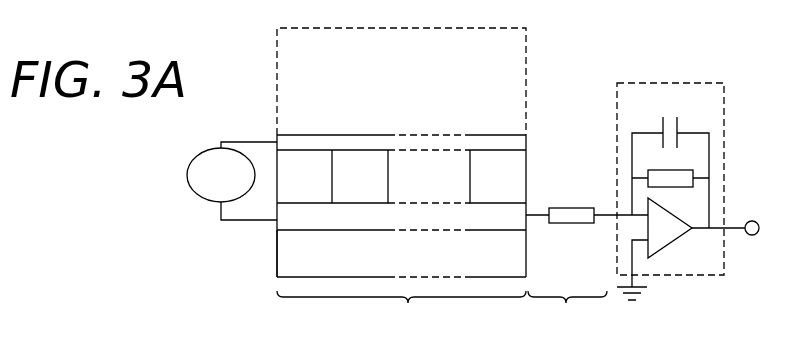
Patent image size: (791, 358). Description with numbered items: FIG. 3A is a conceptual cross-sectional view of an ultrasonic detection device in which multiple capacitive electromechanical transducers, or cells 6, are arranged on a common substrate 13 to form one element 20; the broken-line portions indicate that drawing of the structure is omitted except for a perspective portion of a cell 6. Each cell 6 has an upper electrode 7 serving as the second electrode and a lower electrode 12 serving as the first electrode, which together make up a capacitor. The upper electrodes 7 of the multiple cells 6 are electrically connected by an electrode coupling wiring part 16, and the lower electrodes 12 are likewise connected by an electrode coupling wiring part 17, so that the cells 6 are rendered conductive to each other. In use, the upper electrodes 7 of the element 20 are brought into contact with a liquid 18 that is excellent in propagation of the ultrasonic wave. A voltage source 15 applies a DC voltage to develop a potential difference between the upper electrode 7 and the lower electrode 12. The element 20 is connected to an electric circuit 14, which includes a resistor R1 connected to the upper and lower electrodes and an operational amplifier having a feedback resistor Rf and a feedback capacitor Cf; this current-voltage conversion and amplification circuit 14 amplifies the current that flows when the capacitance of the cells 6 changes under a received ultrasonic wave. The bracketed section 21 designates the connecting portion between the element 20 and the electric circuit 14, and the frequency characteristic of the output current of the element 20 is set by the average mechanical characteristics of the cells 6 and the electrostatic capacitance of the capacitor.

The capacitive electromechanical transducer 6 is at (353, 163).
The upper electrode 7 is at (363, 142).
The lower electrode 12 is at (355, 218).
The substrate 13 is at (283, 258).
The electric circuit 14 is at (688, 205).
The voltage source 15 is at (197, 172).
The electrode coupling wiring part 16 is at (526, 145).
The electrode coupling wiring part 17 is at (297, 218).
The liquid 18 is at (526, 52).
The element 20 is at (401, 314).
The connection section 21 is at (567, 314).
The resistor R1 is at (571, 223).
The feedback capacitor Cf is at (678, 125).
The feedback resistor Rf is at (673, 168).